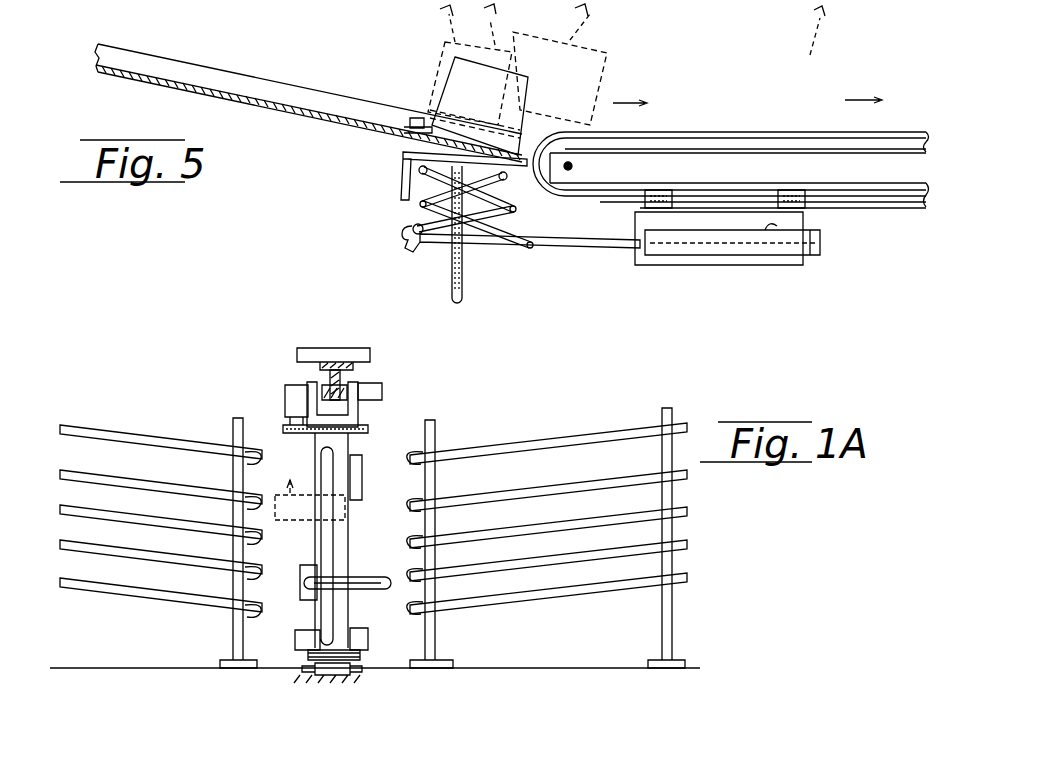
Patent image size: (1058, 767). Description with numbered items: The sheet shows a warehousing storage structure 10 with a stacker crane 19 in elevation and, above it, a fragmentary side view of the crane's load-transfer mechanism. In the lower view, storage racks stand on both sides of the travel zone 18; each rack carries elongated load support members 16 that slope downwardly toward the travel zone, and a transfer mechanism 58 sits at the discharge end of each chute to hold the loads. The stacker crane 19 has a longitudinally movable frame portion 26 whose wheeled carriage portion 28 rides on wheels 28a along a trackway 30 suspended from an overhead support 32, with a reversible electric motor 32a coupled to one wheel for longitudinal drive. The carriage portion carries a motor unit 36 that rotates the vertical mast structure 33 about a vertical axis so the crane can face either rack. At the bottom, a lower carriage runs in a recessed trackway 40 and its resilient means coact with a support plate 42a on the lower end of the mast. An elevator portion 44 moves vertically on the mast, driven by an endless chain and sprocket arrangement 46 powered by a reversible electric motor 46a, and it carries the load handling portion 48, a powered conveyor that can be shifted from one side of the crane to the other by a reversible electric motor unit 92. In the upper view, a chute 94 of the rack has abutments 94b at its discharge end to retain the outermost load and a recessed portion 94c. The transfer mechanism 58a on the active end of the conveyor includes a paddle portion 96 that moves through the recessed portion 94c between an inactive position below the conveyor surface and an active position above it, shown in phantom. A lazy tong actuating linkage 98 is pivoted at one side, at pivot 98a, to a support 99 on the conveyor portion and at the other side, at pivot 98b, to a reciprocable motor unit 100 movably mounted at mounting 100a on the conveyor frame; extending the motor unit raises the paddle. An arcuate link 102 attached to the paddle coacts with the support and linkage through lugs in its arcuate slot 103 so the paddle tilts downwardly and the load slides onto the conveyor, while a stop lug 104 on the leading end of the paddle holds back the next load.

In FIG. 1A, the warehousing storage structure 10 is at (142, 434).
In FIG. 1A, the load support member 16 is at (128, 450).
In FIG. 1A, the travel zone 18 is at (272, 426).
In FIG. 5, the stacker crane 19 is at (894, 213).
In FIG. 1A, the stacker crane 19 is at (374, 447).
In FIG. 1A, the longitudinally movable frame portion 26 is at (350, 457).
In FIG. 1A, the wheeled carriage portion 28 is at (356, 398).
In FIG. 1A, the wheels 28a is at (330, 360).
In FIG. 1A, the trackway 30 is at (342, 366).
In FIG. 1A, the overhead support 32 is at (338, 348).
In FIG. 1A, the reversible electric motor 32a is at (382, 392).
In FIG. 1A, the vertical mast structure 33 is at (380, 521).
In FIG. 1A, the motor unit 36 is at (288, 385).
In FIG. 1A, the recessed trackway 40 is at (366, 676).
In FIG. 1A, the support plate 42a is at (360, 648).
In FIG. 1A, the elevator portion 44 is at (312, 572).
In FIG. 1A, the endless chain and sprocket arrangement 46 is at (318, 474).
In FIG. 1A, the reversible electric motor 46a is at (292, 640).
In FIG. 5, the load handling portion 48 is at (664, 114).
In FIG. 1A, the load handling portion 48 is at (380, 596).
In FIG. 1A, the transfer mechanism 58 is at (242, 486).
In FIG. 5, the transfer mechanism 58a is at (390, 240).
In FIG. 1A, the reversible electric motor unit 92 is at (360, 576).
In FIG. 5, the chute 94 is at (250, 77).
In FIG. 5, the abutments 94b is at (537, 134).
In FIG. 5, the recessed portion 94c is at (464, 130).
In FIG. 5, the paddle portion 96 is at (428, 112).
In FIG. 5, the lazy tong actuating linkage 98 is at (520, 211).
In FIG. 5, the pivot 98a is at (412, 226).
In FIG. 5, the pivot 98b is at (534, 246).
In FIG. 5, the support 99 is at (419, 250).
In FIG. 5, the reciprocable motor unit 100 is at (808, 258).
In FIG. 5, the movable mounting 100a is at (777, 227).
In FIG. 5, the arcuate link 102 is at (465, 273).
In FIG. 5, the arcuate slot 103 is at (466, 300).
In FIG. 5, the stop lug 104 is at (410, 118).